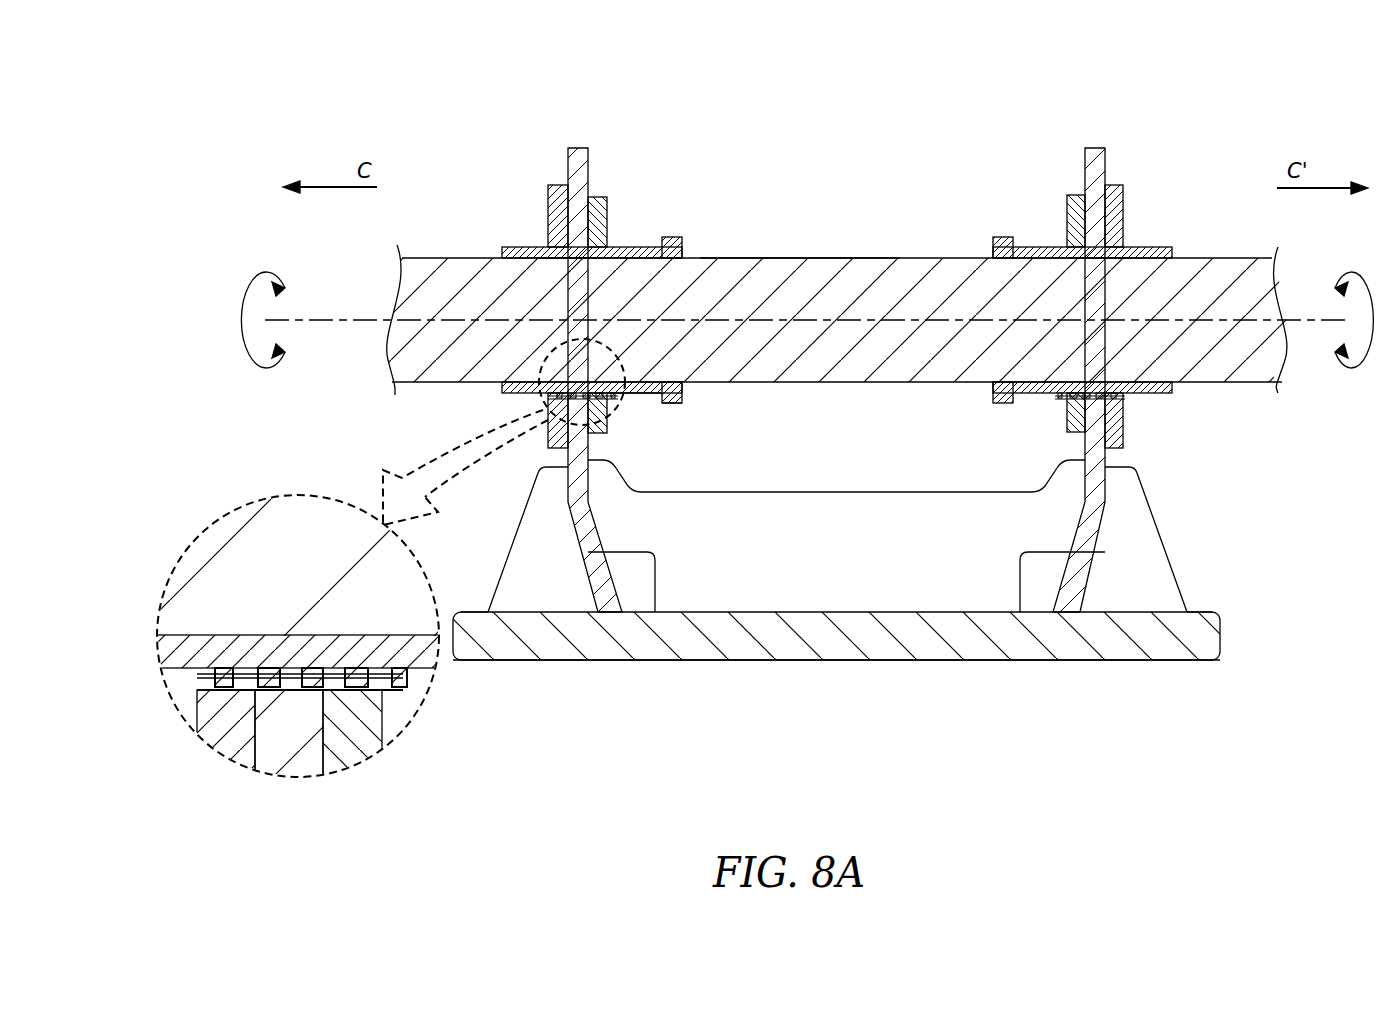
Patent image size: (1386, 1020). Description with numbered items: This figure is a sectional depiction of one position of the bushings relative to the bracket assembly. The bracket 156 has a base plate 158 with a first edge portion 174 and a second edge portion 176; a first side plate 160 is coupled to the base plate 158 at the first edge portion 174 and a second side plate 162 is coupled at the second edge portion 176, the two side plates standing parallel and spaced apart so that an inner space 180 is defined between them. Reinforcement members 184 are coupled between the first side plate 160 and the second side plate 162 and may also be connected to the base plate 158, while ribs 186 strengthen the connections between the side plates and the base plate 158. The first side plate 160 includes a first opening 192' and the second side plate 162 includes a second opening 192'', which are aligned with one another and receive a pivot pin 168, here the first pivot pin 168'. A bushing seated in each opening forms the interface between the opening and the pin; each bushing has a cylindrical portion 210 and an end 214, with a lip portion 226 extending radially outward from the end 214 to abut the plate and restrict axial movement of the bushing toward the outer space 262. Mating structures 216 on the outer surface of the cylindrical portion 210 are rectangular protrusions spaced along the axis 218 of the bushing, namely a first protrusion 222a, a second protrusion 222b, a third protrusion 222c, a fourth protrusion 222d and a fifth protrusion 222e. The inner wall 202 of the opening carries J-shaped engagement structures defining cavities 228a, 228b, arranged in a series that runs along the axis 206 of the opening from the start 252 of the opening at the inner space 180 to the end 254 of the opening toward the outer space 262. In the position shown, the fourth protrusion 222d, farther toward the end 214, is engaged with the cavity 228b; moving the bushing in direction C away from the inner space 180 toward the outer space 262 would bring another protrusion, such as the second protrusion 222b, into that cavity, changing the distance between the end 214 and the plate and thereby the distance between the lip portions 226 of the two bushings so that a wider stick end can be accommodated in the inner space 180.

The bracket 156 is at (650, 668).
The base plate 158 is at (990, 650).
The first side plate 160 is at (590, 156).
The second side plate 162 is at (1113, 148).
The pivot pin 168 is at (840, 298).
The first pivot pin 168' is at (800, 222).
The first edge portion 174 is at (480, 612).
The second edge portion 176 is at (1220, 610).
The inner space 180 is at (843, 450).
The reinforcement member 184 is at (898, 492).
The rib 186 is at (527, 502).
The first opening 192' is at (468, 270).
The second opening 192'' is at (1206, 274).
The inner wall 202 is at (628, 247).
The axis 206 is at (1300, 322).
The cylindrical portion 210 is at (678, 236).
The end 214 is at (683, 396).
The mating structure 216 is at (535, 395).
The axis 218 is at (348, 324).
The first protrusion 222a is at (634, 402).
The second protrusion 222b is at (397, 690).
The third protrusion 222c is at (305, 690).
The fourth protrusion 222d is at (228, 690).
The fifth protrusion 222e is at (545, 401).
The lip portion 226 is at (660, 403).
The cavity 228a is at (353, 688).
The cavity 228b is at (272, 690).
The start of the opening 252 is at (608, 203).
The end of the opening 254 is at (548, 198).
The outer space 262 is at (290, 241).